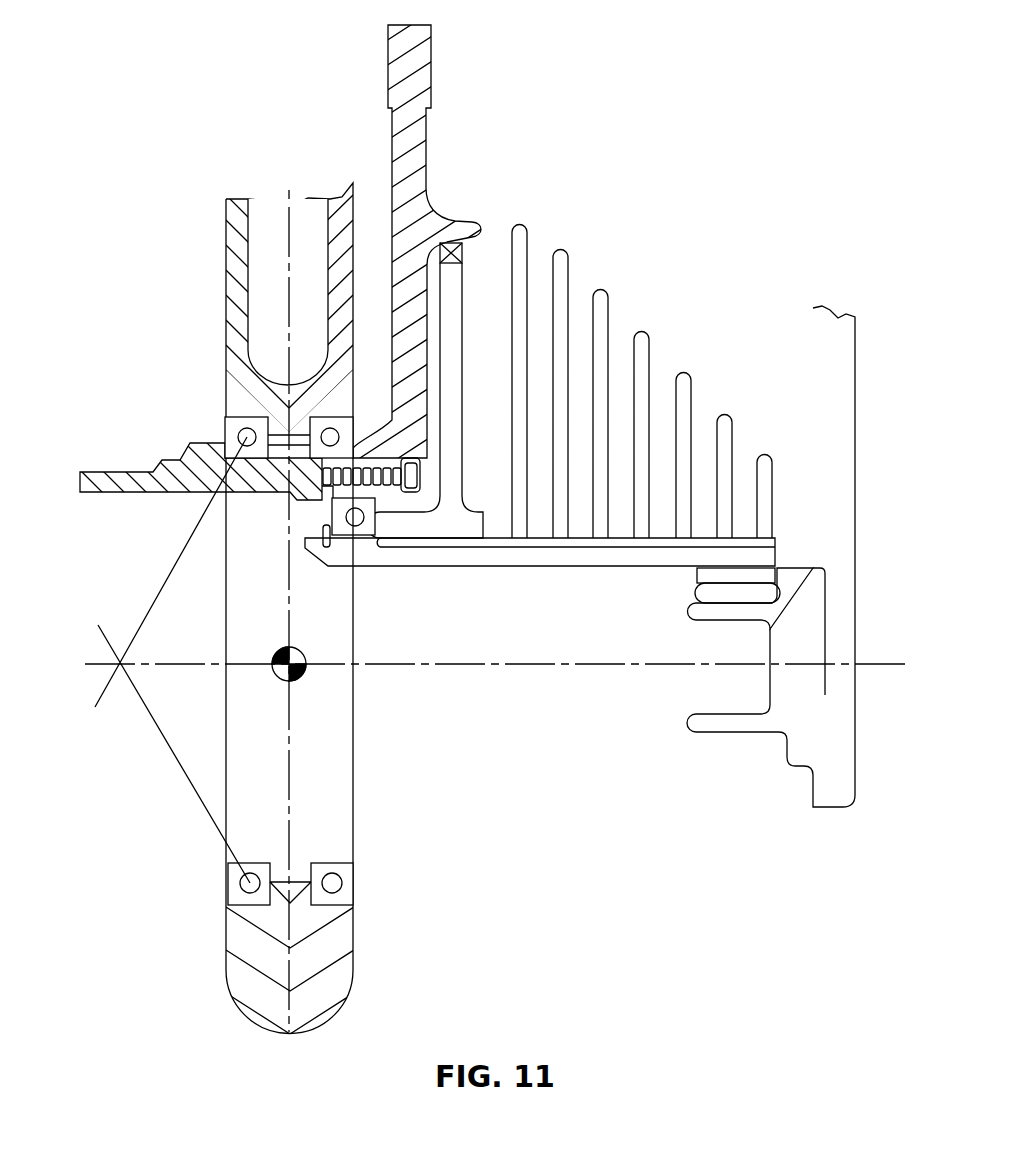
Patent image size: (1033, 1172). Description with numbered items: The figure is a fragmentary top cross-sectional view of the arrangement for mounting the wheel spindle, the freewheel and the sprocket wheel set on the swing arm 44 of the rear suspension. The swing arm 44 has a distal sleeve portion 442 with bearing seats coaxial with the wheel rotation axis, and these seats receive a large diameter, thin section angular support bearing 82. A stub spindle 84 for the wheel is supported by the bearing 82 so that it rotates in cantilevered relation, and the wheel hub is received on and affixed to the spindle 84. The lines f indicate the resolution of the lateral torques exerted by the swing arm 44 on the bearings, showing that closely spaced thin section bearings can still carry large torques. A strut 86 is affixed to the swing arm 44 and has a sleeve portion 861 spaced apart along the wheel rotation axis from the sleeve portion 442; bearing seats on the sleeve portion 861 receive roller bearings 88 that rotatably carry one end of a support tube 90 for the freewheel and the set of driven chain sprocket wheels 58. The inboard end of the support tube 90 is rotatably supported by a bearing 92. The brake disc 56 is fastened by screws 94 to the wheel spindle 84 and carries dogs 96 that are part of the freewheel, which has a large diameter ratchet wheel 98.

The swing arm 44 is at (212, 251).
The distal sleeve portion 442 is at (228, 949).
The brake disc 56 is at (440, 78).
The freewheel and driven sprocket wheel set 58 is at (651, 312).
The angular support bearing 82 is at (233, 430).
The stub spindle 84 is at (121, 497).
The strut 86 is at (857, 419).
The sleeve portion 861 is at (733, 734).
The roller bearings 88 is at (695, 594).
The support tube 90 is at (523, 567).
The bearing 92 is at (360, 528).
The screws 94 is at (412, 487).
The dogs 96 is at (466, 242).
The ratchet wheel 98 is at (458, 330).
The lines of torque resolution f is at (158, 593).